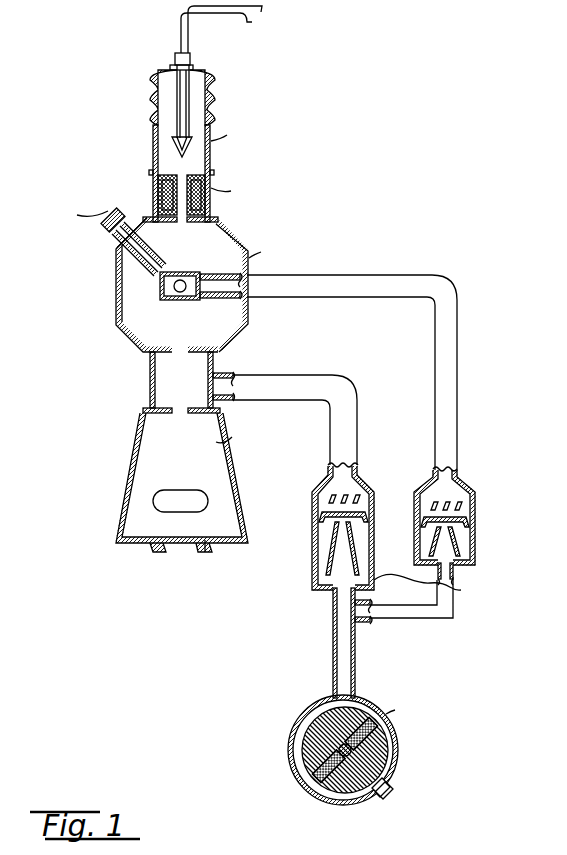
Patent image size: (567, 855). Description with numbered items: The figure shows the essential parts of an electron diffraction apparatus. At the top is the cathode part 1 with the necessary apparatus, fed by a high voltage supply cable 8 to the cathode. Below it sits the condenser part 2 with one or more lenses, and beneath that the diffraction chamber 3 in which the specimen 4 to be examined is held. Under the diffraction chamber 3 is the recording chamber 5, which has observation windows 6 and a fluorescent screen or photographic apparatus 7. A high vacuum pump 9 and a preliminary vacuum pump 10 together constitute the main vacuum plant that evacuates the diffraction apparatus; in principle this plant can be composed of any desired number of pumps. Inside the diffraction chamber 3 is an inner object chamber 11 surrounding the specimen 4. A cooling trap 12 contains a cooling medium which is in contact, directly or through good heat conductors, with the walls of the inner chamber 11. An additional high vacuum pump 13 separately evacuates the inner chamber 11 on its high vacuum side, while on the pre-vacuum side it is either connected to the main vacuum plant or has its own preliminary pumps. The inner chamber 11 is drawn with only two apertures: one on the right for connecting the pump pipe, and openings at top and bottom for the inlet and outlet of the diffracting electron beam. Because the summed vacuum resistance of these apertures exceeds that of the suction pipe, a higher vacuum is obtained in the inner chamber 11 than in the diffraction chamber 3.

The cathode part 1 is at (153, 152).
The condenser part 2 is at (158, 190).
The diffraction chamber 3 is at (233, 237).
The specimen 4 is at (180, 292).
The recording chamber 5 is at (136, 448).
The observation windows 6 is at (167, 490).
The fluorescent screen or photographic apparatus 7 is at (170, 544).
The high voltage supply cable 8 is at (180, 30).
The high vacuum pump 9 is at (365, 494).
The preliminary vacuum pump 10 is at (395, 762).
The inner object chamber 11 is at (192, 272).
The cooling trap 12 is at (111, 238).
The additional high vacuum pump 13 is at (468, 494).